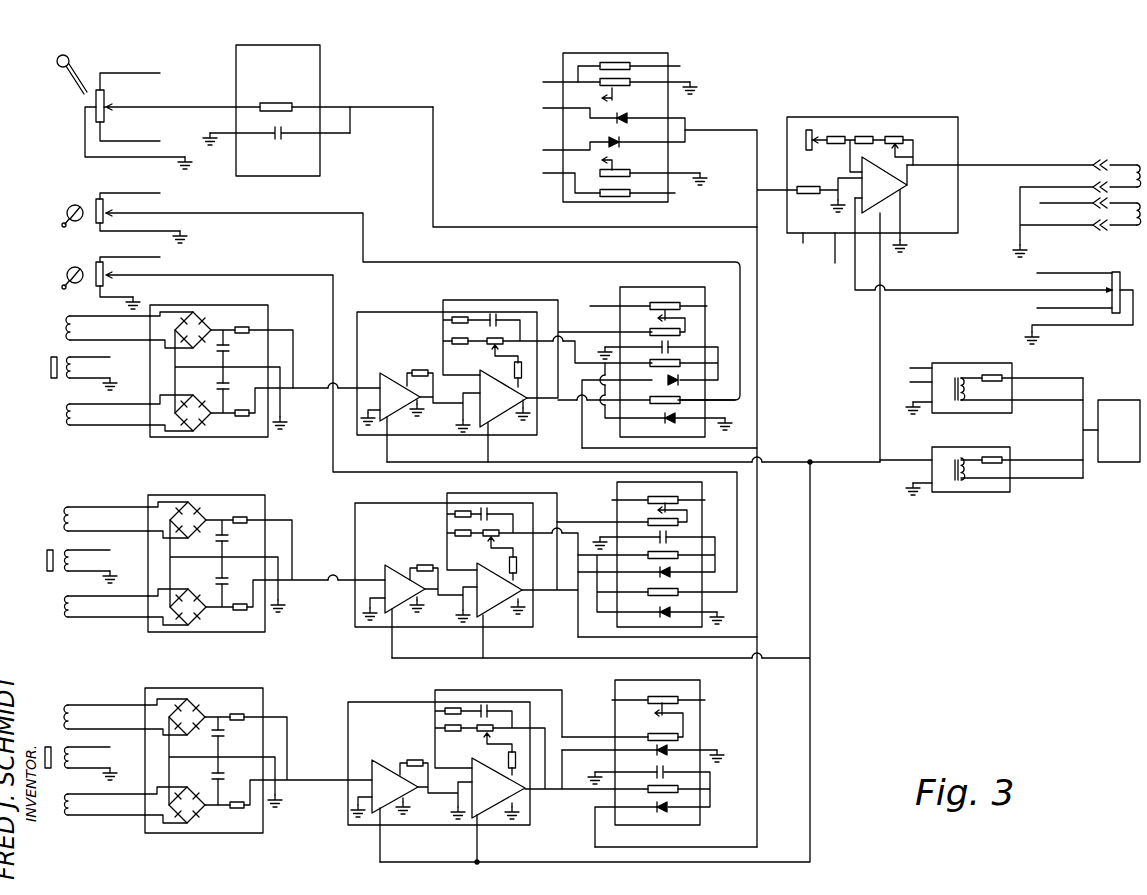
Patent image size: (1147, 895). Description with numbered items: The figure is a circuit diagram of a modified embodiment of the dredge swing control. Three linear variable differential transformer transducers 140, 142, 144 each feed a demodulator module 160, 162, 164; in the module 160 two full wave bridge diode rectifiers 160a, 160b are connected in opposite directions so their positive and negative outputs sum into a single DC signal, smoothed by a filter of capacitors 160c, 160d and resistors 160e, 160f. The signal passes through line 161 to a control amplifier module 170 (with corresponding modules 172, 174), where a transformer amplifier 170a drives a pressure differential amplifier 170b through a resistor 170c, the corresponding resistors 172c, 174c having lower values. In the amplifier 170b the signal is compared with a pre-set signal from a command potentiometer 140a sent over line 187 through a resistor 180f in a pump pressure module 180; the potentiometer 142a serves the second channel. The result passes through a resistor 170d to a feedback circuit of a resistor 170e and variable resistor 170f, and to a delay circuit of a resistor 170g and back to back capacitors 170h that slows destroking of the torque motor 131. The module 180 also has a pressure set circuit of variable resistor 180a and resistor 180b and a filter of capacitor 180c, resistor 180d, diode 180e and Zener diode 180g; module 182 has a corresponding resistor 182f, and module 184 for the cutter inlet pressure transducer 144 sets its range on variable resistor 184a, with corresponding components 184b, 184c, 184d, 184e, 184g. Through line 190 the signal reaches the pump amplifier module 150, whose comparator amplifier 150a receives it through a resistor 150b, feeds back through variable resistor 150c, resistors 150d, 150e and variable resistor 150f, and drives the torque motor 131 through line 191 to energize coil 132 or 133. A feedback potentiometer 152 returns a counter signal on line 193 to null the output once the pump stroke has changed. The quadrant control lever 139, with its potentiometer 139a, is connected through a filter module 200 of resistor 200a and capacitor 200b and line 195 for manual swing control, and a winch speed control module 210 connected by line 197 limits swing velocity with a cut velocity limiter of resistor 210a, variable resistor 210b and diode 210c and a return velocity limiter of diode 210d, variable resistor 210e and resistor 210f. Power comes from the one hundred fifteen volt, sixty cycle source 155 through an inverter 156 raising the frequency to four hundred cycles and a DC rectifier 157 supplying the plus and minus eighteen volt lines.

The torque motor 131 is at (1095, 146).
The coil 132 is at (1129, 160).
The coil 133 is at (1129, 228).
The quadrant control panel lever 139 is at (57, 56).
The command potentiometer 139a is at (146, 56).
The transducer 140 is at (110, 316).
The command potentiometer 140a is at (118, 196).
The transducer 142 is at (103, 504).
The command potentiometer 142a is at (118, 259).
The cutter inlet pressure transducer 144 is at (103, 700).
The pump amplifier module 150 is at (928, 117).
The comparator amplifier 150a is at (905, 196).
The 12K-ohm resistor 150b is at (806, 195).
The 25K-ohm variable resistor 150c is at (809, 151).
The 68K-ohm resistor 150d is at (836, 134).
The 12K-ohm resistor 150e is at (866, 134).
The 500K-ohm variable resistor 150f is at (905, 139).
The feedback potentiometer 152 is at (1116, 271).
The power source 155 is at (1123, 400).
The inverter 156 is at (975, 492).
The DC rectifier 157 is at (975, 363).
The demodulator module 160 is at (270, 308).
The full wave bridge diode rectifier 160a is at (233, 300).
The full wave bridge diode rectifier 160b is at (193, 396).
The capacitor 160c is at (236, 351).
The capacitor 160d is at (240, 380).
The 4.7K-ohm resistor 160e is at (250, 327).
The 4.7K-ohm resistor 160f is at (244, 418).
The line 161 is at (300, 390).
The second demodulator 162 is at (244, 498).
The third demodulator 164 is at (244, 690).
The control amplifier module 170 is at (387, 311).
The linear variable differential transformer amplifier 170a is at (395, 414).
The pressure differential amplifier 170b is at (508, 403).
The 1.8K-ohm resistor 170c is at (416, 369).
The 330-ohm resistor 170d is at (514, 370).
The 22K-ohm resistor 170e is at (452, 340).
The 500K-ohm variable resistor 170f is at (490, 345).
The 15K-ohm resistor 170g is at (462, 316).
The back to back capacitors 170h is at (495, 314).
The control amplifier module 172 is at (401, 503).
The balance resistor 172c is at (424, 564).
The control amplifier module 174 is at (410, 702).
The balance resistor 174c is at (410, 759).
The pump pressure module 180 is at (681, 287).
The 25K-ohm variable resistor 180a is at (667, 303).
The 82K-ohm resistor 180b is at (652, 331).
The capacitor 180c is at (670, 350).
The 100K-ohm resistor 180d is at (660, 366).
The diode 180e is at (665, 381).
The 330K-ohm resistor 180f is at (660, 402).
The Zener diode 180g is at (668, 424).
The pressure module 182 is at (617, 515).
The 270K-ohm resistor 182f is at (665, 596).
The pump pressure module 184 is at (681, 682).
The variable resistor 184a is at (665, 698).
The resistor 184b is at (655, 732).
The capacitor 184c is at (658, 776).
The resistor 184d is at (660, 793).
The diode 184e is at (664, 812).
The diode 184g is at (657, 750).
The line 187 is at (302, 212).
The line 190 is at (757, 372).
The line 191 is at (1004, 164).
The line 193 is at (964, 290).
The line 195 is at (515, 227).
The line 197 is at (746, 130).
The module 200 is at (326, 70).
The 2.2K-ohm resistor 200a is at (293, 92).
The capacitor 200b is at (278, 140).
The winch speed control module 210 is at (560, 61).
The 2.2K-ohm resistor 210a is at (628, 52).
The 1K-ohm variable resistor 210b is at (606, 87).
The diode 210c is at (630, 124).
The diode 210d is at (606, 140).
The 1K-ohm variable resistor 210e is at (604, 168).
The 2.2K-ohm resistor 210f is at (620, 197).